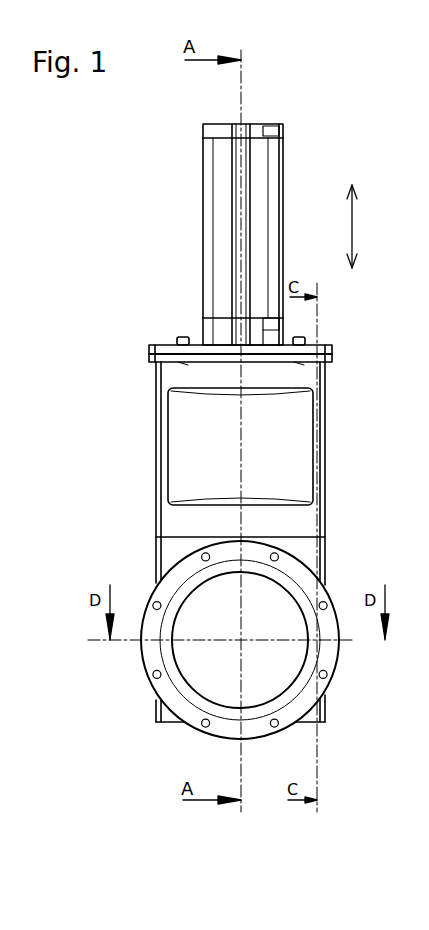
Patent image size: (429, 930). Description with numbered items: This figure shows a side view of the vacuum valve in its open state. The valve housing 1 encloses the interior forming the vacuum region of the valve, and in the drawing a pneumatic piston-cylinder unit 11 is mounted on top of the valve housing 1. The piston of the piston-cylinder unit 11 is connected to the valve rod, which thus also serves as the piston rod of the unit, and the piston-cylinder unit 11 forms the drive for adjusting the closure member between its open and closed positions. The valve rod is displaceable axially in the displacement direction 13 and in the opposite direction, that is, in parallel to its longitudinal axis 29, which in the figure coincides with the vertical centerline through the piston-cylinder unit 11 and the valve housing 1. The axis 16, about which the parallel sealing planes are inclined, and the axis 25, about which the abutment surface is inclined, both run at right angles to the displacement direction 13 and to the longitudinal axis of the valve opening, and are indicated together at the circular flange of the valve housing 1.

The valve housing 1 is at (329, 503).
The pneumatic piston-cylinder unit 11 is at (299, 148).
The displacement direction 13 is at (352, 225).
The longitudinal axis of the valve rod 29 is at (242, 212).
The axis of inclination of the sealing surface and seal planes 16 is at (197, 645).
The axis of inclination of the abutment surface 25 is at (102, 642).